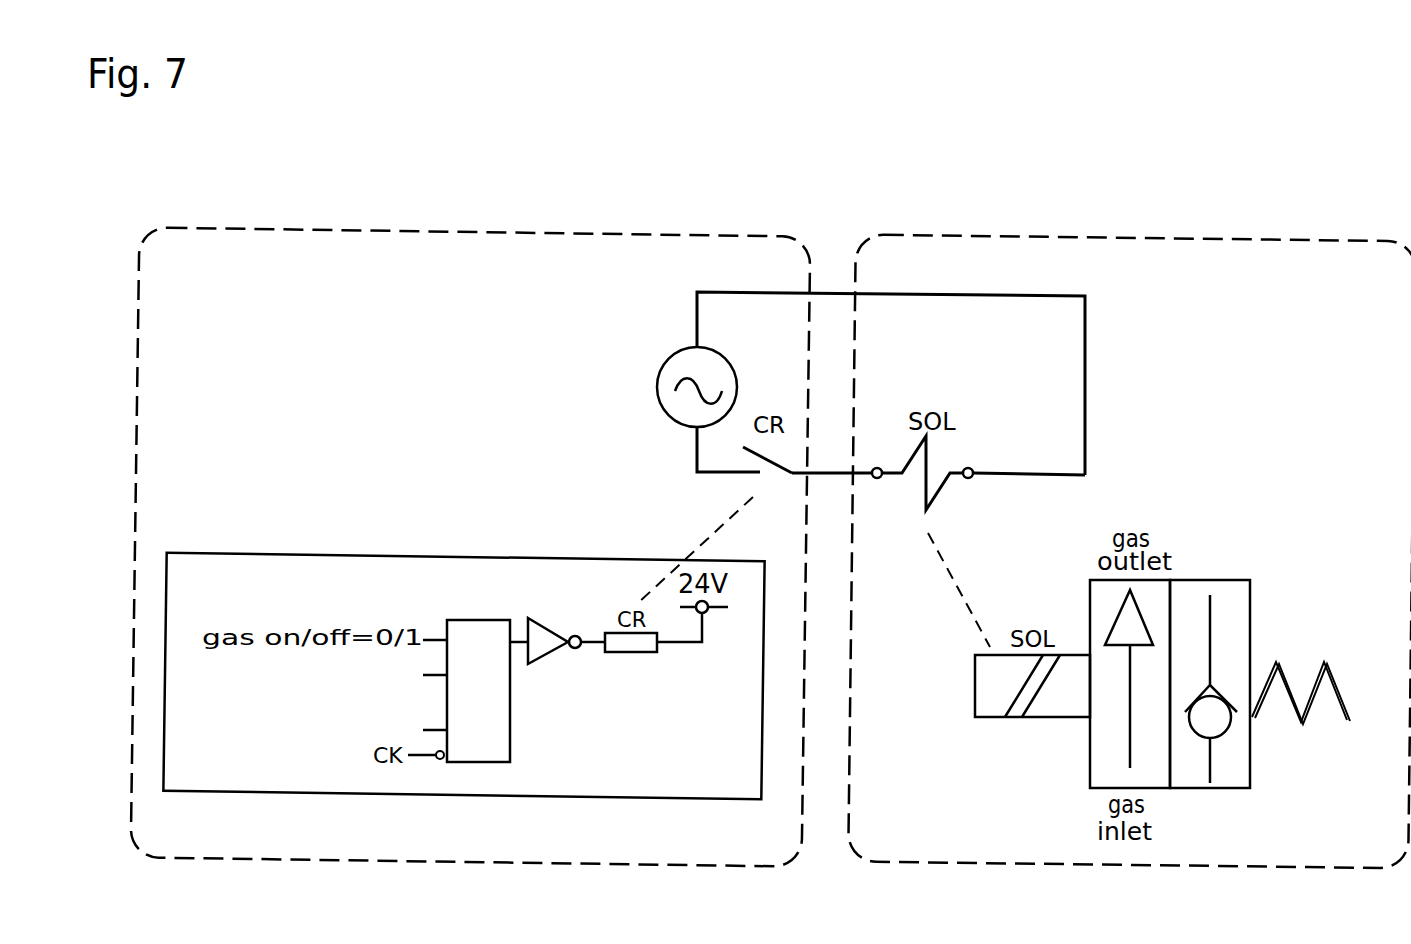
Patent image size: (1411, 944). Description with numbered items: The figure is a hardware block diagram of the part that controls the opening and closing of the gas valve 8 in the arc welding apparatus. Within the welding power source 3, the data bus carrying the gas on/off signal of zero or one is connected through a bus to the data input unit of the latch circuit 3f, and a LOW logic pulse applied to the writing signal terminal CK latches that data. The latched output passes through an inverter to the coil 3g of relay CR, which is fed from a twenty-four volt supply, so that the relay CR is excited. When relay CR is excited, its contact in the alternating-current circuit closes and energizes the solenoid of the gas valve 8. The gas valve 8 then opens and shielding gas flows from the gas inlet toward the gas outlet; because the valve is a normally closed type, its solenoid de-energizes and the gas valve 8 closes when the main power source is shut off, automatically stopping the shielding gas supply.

The welding power source 3 is at (315, 228).
The gas valve 8 is at (943, 235).
The latch circuit 3f is at (465, 618).
The relay coil 3g is at (637, 653).